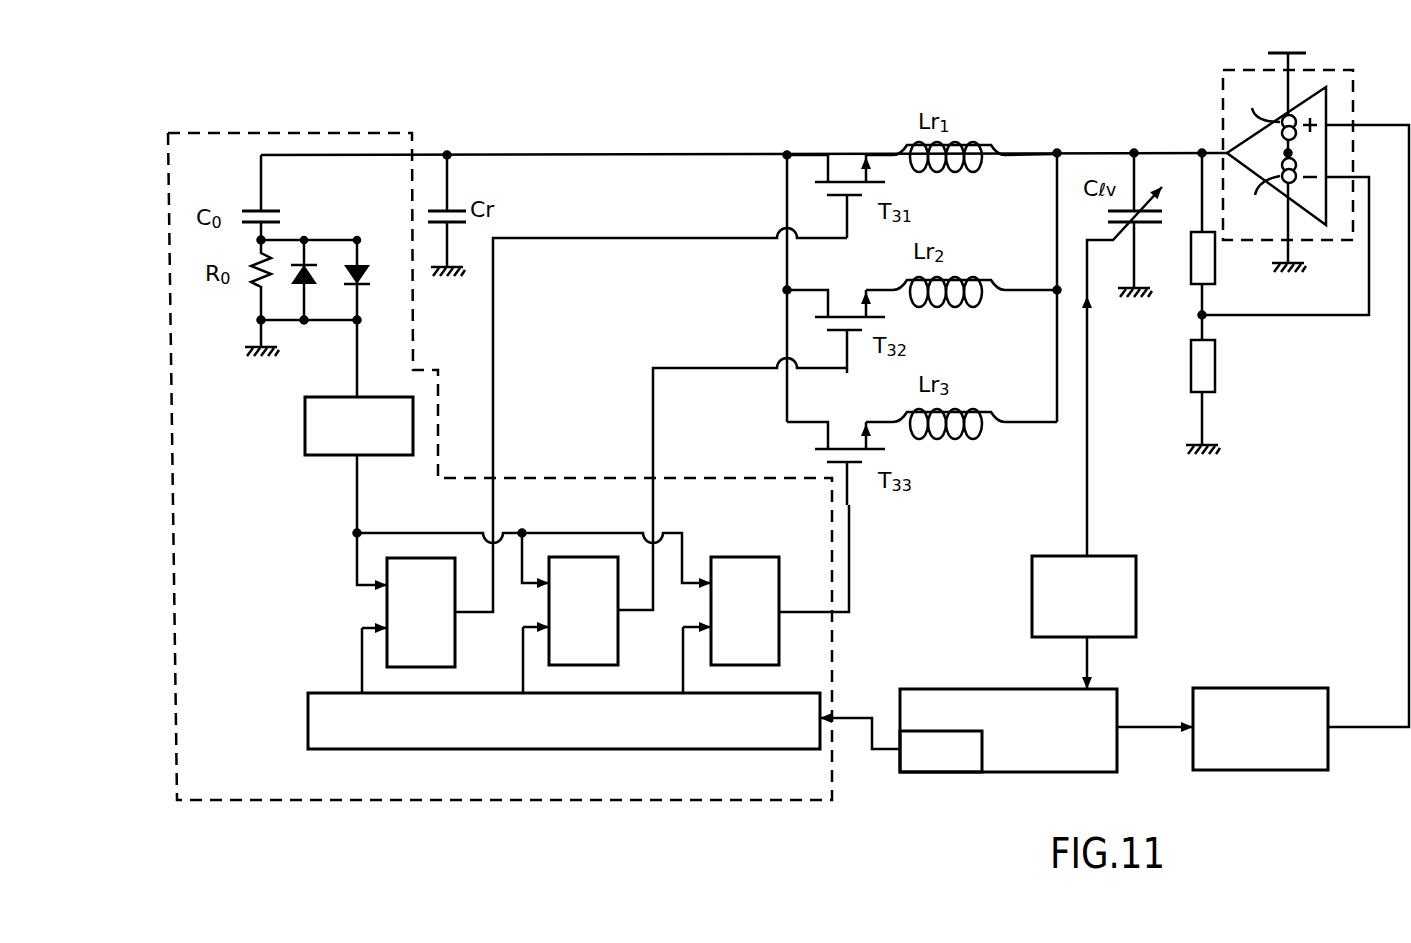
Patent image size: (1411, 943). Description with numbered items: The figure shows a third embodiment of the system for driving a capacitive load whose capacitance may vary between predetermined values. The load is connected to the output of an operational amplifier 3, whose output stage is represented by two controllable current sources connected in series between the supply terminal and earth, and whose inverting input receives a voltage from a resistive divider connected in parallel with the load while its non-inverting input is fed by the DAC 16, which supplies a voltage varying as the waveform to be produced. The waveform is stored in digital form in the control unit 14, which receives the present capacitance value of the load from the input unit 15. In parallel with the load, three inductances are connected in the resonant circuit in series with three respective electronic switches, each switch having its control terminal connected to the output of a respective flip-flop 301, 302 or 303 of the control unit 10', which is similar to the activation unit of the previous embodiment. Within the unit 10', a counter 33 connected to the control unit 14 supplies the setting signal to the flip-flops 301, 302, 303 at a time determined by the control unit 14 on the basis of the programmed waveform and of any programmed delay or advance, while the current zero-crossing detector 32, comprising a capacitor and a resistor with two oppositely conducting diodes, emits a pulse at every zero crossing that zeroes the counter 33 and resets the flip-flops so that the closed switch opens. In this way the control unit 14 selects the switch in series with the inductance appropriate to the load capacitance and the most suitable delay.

The operational amplifier 3 is at (1220, 116).
The control unit (activation unit) 10' is at (500, 502).
The control unit 14 is at (947, 697).
The input unit 15 is at (1125, 582).
The digital-analog convertor (DAC) 16 is at (1255, 695).
The current zero-crossing detector 32 is at (323, 447).
The counter 33 is at (663, 730).
The flip-flop 301 is at (422, 657).
The flip-flop 302 is at (583, 657).
The flip-flop 303 is at (745, 657).